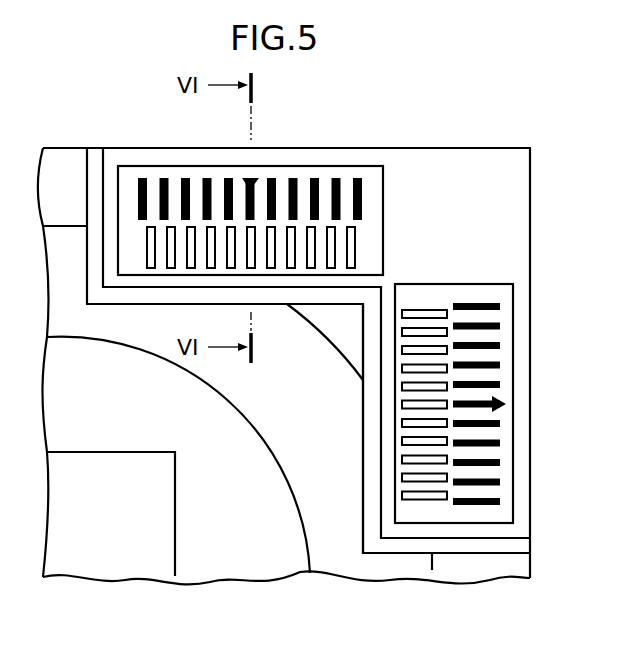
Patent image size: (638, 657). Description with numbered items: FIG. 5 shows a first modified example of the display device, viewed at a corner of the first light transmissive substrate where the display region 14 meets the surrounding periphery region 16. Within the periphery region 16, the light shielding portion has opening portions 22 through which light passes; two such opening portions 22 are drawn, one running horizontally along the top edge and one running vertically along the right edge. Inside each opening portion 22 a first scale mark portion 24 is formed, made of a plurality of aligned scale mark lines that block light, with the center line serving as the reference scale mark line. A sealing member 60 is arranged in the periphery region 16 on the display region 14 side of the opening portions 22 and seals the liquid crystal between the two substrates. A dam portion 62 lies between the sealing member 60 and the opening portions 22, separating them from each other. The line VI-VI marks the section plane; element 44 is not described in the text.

The display region 14 is at (111, 514).
The periphery region 16 is at (507, 192).
The opening portions 22 is at (348, 170).
The first scale mark portion 24 is at (375, 196).
The slots 44 is at (368, 247).
The sealing member 60 is at (308, 546).
The dam portion 62 is at (358, 533).